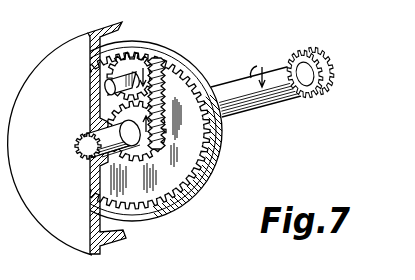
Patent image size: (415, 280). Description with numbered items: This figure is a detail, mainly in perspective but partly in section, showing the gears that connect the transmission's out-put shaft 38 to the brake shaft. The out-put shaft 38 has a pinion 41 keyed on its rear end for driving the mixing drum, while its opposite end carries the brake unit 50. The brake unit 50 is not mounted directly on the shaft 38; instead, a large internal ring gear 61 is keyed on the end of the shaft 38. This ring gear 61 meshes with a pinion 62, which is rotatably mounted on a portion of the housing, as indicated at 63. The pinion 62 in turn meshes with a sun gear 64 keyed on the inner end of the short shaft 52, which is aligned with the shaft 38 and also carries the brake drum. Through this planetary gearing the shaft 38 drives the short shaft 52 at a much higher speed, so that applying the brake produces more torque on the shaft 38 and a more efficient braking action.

The brake unit 50 is at (33, 69).
The internal ring gear 61 is at (184, 60).
The pinion 62 is at (133, 71).
The mounting of the pinion 63 is at (107, 85).
The sun gear 64 is at (125, 115).
The short shaft 52 is at (76, 147).
The out-put shaft 38 is at (266, 106).
The pinion 41 is at (306, 51).